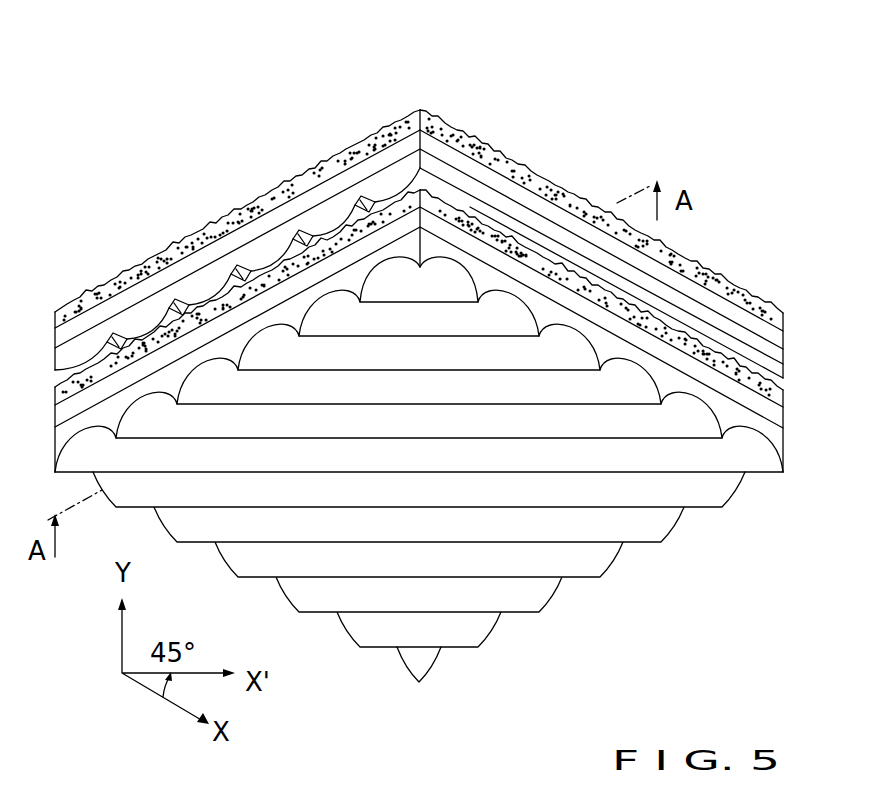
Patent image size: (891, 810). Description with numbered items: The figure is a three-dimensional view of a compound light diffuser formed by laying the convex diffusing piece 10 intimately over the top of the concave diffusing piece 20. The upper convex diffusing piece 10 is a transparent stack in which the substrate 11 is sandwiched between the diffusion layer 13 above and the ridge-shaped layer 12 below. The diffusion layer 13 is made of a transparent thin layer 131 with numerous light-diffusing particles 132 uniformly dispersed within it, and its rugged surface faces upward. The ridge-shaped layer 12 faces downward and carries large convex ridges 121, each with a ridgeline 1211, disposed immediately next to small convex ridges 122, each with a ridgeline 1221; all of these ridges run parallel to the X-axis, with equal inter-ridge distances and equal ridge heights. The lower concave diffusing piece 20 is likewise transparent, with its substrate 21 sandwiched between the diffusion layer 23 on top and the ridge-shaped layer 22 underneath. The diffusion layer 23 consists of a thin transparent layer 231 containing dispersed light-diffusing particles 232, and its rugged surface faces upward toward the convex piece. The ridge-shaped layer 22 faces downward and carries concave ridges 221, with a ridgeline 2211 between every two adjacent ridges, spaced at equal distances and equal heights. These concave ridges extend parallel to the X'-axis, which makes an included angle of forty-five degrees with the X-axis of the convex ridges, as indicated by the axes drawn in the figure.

The convex diffusing piece 10 is at (356, 128).
The diffusion layer 13 is at (783, 317).
The transparent thin layer 131 is at (533, 178).
The light-diffusing particles 132 is at (488, 148).
The substrate 11 is at (783, 338).
The ridge-shaped layer 12 is at (783, 360).
The large convex ridges 121 is at (167, 318).
The ridgeline 1211 is at (153, 322).
The small convex ridges 122 is at (258, 278).
The ridgeline 1221 is at (247, 240).
The concave diffusing piece 20 is at (366, 662).
The diffusion layer 23 is at (783, 397).
The thin transparent layer 231 is at (697, 342).
The light-diffusing particles 232 is at (745, 374).
The substrate 21 is at (783, 422).
The ridge-shaped layer 22 is at (778, 446).
The concave ridges 221 is at (592, 552).
The ridgeline 2211 is at (538, 582).